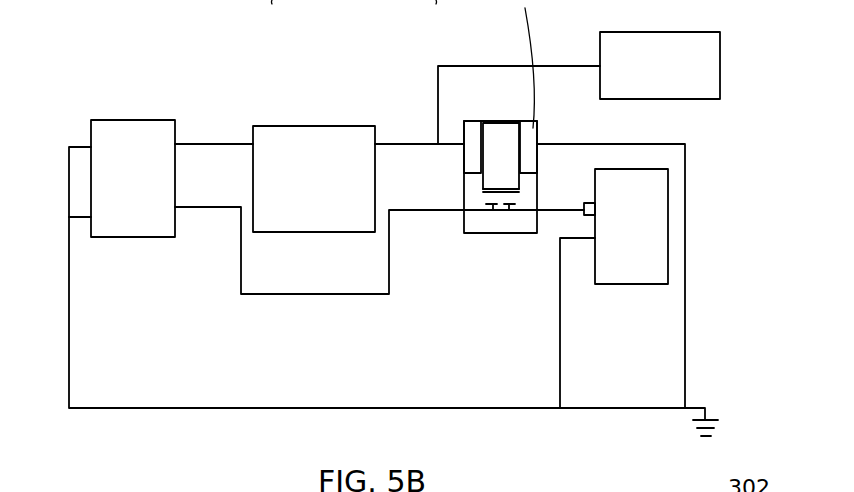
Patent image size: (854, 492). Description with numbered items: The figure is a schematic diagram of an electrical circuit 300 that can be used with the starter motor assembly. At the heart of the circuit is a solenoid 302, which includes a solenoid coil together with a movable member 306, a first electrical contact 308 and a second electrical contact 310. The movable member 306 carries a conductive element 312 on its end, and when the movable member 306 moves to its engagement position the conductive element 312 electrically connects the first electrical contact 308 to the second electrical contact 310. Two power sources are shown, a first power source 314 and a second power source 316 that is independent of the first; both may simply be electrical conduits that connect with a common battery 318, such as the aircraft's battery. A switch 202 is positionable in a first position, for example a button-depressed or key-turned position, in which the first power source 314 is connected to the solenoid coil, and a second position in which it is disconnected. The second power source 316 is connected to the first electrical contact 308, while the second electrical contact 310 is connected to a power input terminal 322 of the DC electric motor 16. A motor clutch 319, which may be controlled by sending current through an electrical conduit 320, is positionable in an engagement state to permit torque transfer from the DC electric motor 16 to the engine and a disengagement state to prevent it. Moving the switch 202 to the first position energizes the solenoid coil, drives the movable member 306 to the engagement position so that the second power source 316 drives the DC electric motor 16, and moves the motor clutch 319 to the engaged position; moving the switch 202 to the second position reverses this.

The electrical circuit 300 is at (131, 43).
The battery 318 is at (143, 122).
The first power source 314 is at (210, 143).
The switch 202 is at (325, 126).
The electrical conduit 320 is at (562, 66).
The motor clutch 319 is at (720, 80).
The solenoid 302 is at (473, 120).
The movable member 306 is at (496, 137).
The conductive element 312 is at (487, 193).
The second power source 316 is at (213, 207).
The first electrical contact 308 is at (477, 210).
The second electrical contact 310 is at (518, 210).
The power input terminal 322 is at (585, 218).
The DC electric motor 16 is at (668, 243).